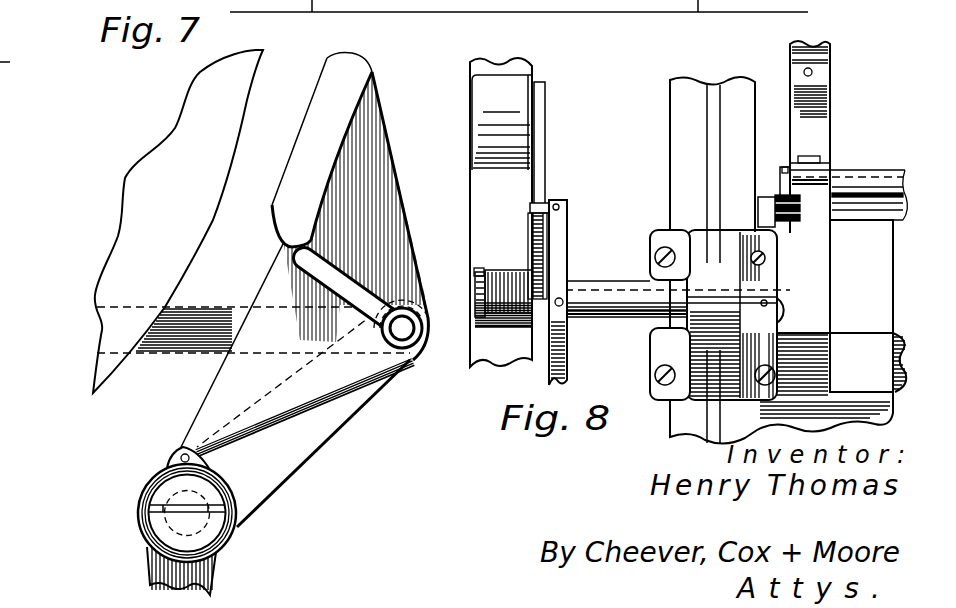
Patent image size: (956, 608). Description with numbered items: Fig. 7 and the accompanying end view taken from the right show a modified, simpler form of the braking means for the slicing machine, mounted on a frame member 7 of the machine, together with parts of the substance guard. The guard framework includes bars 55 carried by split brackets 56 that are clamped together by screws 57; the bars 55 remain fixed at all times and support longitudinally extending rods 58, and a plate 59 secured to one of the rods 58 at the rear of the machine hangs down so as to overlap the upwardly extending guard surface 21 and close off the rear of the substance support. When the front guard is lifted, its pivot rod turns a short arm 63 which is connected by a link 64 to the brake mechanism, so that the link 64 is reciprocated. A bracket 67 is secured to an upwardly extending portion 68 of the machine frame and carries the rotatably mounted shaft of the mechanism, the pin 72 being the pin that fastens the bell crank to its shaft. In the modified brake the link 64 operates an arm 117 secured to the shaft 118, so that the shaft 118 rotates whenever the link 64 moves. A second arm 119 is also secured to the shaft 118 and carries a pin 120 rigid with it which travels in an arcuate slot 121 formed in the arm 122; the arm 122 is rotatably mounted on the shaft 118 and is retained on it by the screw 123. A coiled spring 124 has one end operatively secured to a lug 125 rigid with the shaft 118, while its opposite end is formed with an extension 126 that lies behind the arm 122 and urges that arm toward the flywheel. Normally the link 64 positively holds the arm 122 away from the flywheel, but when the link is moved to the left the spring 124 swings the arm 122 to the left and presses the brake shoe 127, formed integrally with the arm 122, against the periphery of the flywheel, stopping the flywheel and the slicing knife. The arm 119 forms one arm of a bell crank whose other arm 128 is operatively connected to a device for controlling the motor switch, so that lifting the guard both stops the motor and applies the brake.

In FIG. 7, the frame body 7 is at (245, 113).
In FIG. 8, the frame body 7 is at (488, 367).
In FIG. 8, the upwardly extending guard surface 21 is at (870, 407).
In FIG. 8, the bars 55 is at (822, 168).
In FIG. 8, the brackets 56 is at (820, 132).
In FIG. 8, the screws 57 is at (815, 72).
In FIG. 8, the rods 58 is at (887, 182).
In FIG. 8, the plate 59 is at (843, 268).
In FIG. 8, the short arm 63 is at (778, 177).
In FIG. 7, the link 64 is at (218, 317).
In FIG. 8, the link 64 is at (780, 219).
In FIG. 8, the bracket 67 is at (660, 335).
In FIG. 8, the upwardly extending portion 68 is at (673, 420).
In FIG. 8, the pin 72 is at (561, 306).
In FIG. 8, the arm 117 is at (767, 258).
In FIG. 8, the shaft 118 is at (777, 310).
In FIG. 8, the arm 119 is at (557, 253).
In FIG. 7, the pin 120 is at (404, 328).
In FIG. 8, the pin 120 is at (531, 207).
In FIG. 7, the arcuate slot 121 is at (363, 290).
In FIG. 7, the arm 122 is at (313, 440).
In FIG. 8, the arm 122 is at (542, 180).
In FIG. 7, the screw 123 is at (236, 526).
In FIG. 8, the screw 123 is at (478, 325).
In FIG. 7, the coiled spring 124 is at (237, 495).
In FIG. 8, the coiled spring 124 is at (500, 318).
In FIG. 7, the lug 125 is at (177, 457).
In FIG. 8, the lug 125 is at (481, 267).
In FIG. 7, the extension 126 is at (413, 370).
In FIG. 8, the extension 126 is at (528, 222).
In FIG. 7, the brake shoe 127 is at (333, 72).
In FIG. 8, the brake shoe 127 is at (482, 106).
In FIG. 7, the arm 128 is at (203, 573).
In FIG. 8, the arm 128 is at (560, 382).